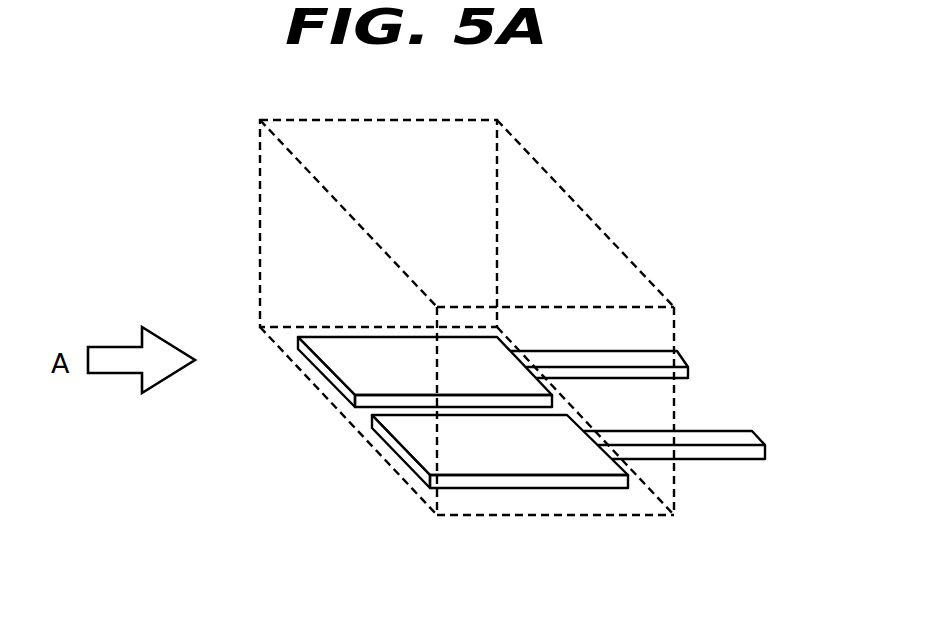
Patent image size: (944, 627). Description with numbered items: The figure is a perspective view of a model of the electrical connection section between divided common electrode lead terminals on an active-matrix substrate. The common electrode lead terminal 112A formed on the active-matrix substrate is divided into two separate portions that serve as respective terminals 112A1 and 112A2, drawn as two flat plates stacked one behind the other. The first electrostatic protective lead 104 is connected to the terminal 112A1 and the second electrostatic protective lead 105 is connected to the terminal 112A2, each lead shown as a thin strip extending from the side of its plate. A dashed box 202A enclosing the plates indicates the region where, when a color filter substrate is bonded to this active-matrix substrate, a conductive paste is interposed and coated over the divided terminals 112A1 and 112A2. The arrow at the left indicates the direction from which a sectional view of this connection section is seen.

The casing (dashed outline) 202A is at (568, 200).
The common electrode lead terminal 112A is at (360, 417).
The terminal 112A1 is at (357, 376).
The terminal 112A2 is at (407, 441).
The first electrostatic protective lead 104 is at (677, 350).
The second electrostatic protective lead 105 is at (722, 437).